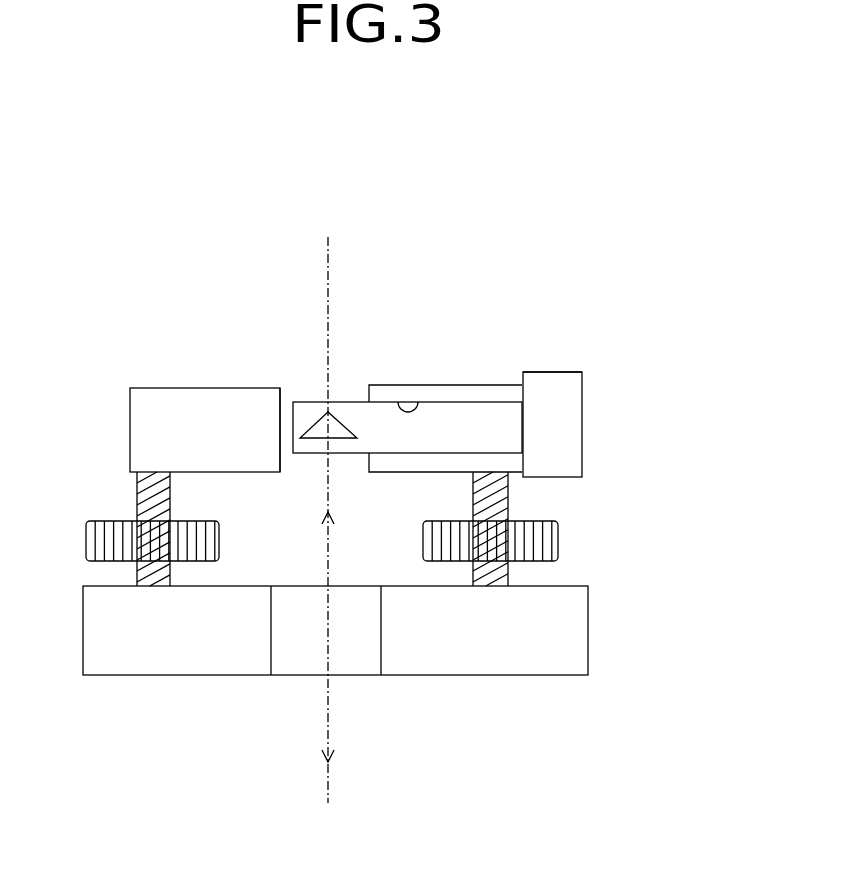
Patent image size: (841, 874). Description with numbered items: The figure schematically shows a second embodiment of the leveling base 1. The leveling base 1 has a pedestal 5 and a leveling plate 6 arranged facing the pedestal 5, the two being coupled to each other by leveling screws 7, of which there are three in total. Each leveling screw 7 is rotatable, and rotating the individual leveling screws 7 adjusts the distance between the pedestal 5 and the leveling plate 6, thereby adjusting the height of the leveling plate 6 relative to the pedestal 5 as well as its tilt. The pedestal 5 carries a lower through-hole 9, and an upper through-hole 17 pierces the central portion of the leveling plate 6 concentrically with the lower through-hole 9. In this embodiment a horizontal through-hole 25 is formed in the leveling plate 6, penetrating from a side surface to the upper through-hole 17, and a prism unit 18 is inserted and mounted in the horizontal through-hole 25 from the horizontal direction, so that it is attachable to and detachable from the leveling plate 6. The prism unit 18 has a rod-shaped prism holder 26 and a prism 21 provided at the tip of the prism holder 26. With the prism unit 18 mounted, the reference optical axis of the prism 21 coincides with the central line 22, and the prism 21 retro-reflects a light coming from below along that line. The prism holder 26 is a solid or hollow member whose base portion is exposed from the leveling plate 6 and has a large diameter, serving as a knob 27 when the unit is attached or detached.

The leveling base 1 is at (182, 387).
The upper through-hole 17 is at (282, 400).
The central line 22 is at (332, 287).
The prism 21 is at (347, 420).
The horizontal through-hole 25 is at (423, 400).
The leveling plate 6 is at (460, 386).
The prism unit 18 is at (547, 371).
The knob 27 is at (570, 371).
The prism holder 26 is at (354, 453).
The leveling screw 7 is at (558, 530).
The pedestal 5 is at (590, 615).
The lower through-hole 9 is at (292, 657).